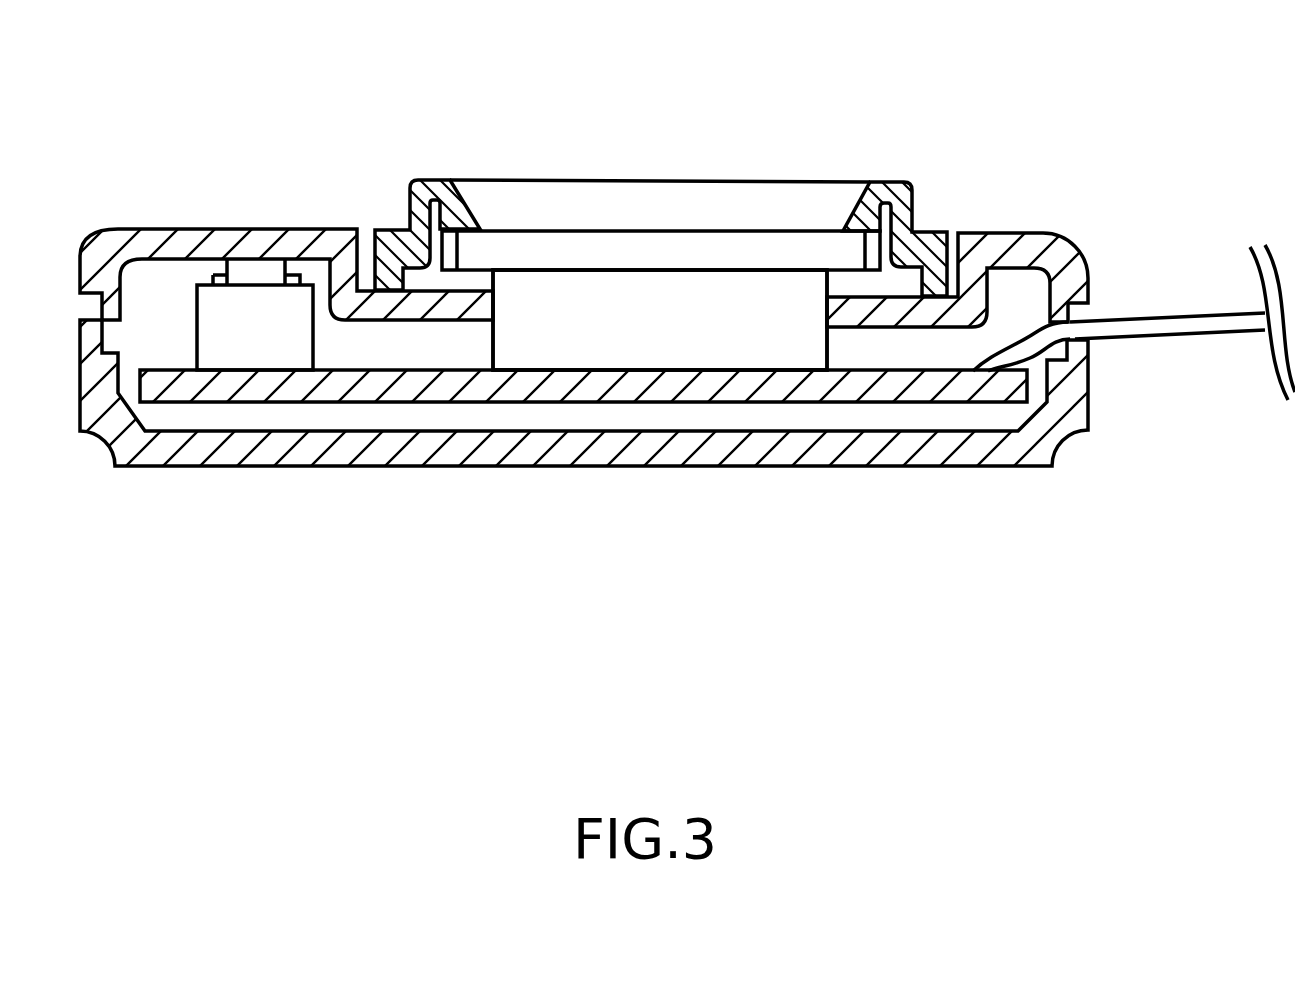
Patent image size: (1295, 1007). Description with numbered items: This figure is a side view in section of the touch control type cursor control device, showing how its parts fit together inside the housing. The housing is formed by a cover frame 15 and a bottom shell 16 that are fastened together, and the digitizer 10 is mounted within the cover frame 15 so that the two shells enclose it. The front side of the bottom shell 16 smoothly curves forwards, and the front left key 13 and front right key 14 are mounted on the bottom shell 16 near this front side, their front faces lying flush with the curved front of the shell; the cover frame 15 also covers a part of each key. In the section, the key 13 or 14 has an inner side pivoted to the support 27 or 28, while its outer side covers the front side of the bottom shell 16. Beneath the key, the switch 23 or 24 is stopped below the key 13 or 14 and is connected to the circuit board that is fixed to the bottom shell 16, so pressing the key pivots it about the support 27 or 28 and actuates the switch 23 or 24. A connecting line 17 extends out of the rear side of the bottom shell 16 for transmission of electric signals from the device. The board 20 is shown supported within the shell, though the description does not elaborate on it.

The digitizer 10 is at (607, 253).
The front left key 13 is at (243, 237).
The front right key 14 is at (957, 280).
The cover frame 15 is at (888, 193).
The bottom shell 16 is at (783, 453).
The connecting line 17 is at (1173, 325).
The circuit board 20 is at (897, 388).
The switch 23 is at (255, 333).
The switch 24 is at (256, 272).
The support 27 is at (583, 318).
The support 28 is at (660, 320).